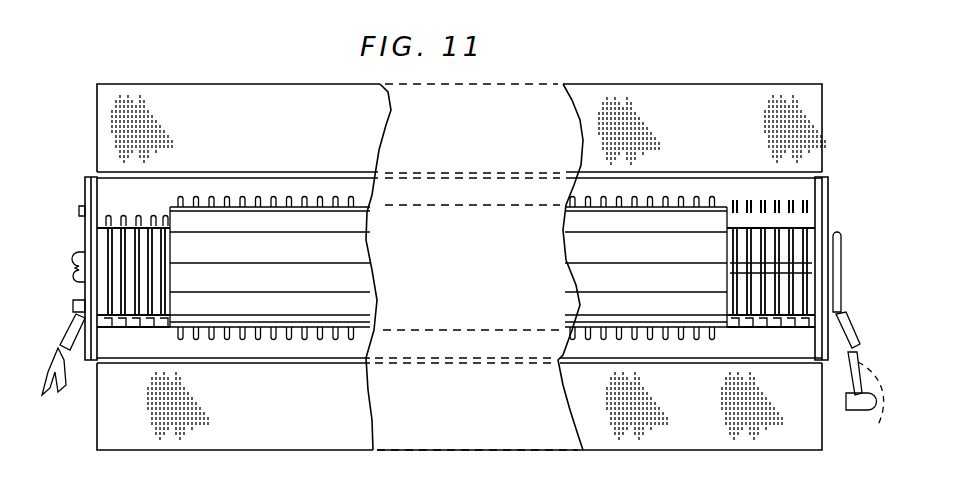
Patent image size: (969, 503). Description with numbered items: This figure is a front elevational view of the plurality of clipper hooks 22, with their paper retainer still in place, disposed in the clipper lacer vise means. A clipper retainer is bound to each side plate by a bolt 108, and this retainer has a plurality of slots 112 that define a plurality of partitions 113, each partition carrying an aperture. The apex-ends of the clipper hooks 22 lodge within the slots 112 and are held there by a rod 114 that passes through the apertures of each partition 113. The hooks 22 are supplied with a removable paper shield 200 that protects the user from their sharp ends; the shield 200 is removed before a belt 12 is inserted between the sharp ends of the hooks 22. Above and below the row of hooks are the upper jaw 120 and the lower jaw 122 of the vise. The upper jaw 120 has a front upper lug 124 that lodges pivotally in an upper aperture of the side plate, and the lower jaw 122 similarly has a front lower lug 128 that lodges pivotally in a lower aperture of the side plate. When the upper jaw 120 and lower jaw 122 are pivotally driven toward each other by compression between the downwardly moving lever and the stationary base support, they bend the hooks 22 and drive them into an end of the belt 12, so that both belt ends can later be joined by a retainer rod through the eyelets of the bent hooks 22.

The belt 12 is at (310, 185).
The clipper hooks 22 is at (683, 200).
The bolt 108 is at (78, 264).
The slots 112 is at (160, 292).
The partitions 113 is at (152, 302).
The rod 114 is at (840, 236).
The upper jaw 120 is at (780, 132).
The lower jaw 122 is at (784, 420).
The front upper lug 124 is at (79, 208).
The front lower lug 128 is at (70, 318).
The paper shield 200 is at (672, 265).